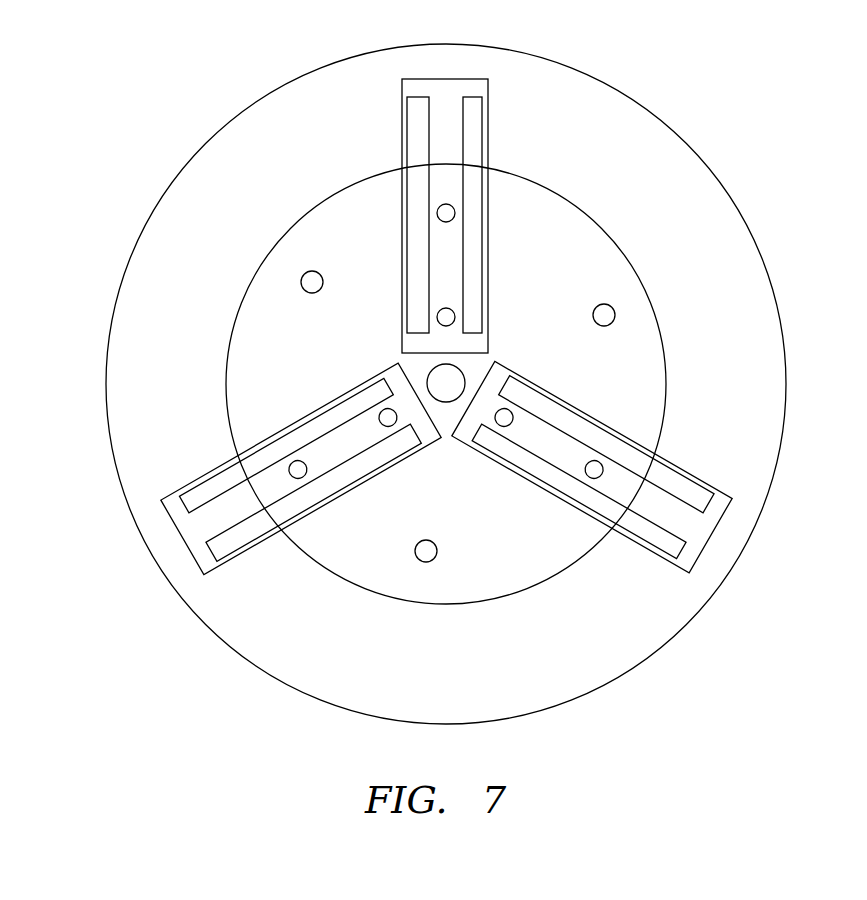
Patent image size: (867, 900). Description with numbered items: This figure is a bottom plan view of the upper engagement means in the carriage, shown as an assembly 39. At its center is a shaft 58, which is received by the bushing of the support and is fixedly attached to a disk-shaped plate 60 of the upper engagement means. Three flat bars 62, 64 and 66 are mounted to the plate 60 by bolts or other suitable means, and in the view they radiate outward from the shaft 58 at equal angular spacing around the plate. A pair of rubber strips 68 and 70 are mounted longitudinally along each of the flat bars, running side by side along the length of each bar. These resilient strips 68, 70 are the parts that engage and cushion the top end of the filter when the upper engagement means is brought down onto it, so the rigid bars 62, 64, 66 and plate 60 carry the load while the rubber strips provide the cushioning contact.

The chuck assembly 39 is at (175, 118).
The shaft 58 is at (462, 380).
The disk-shaped plate 60 is at (635, 98).
The flat bar 62 is at (402, 125).
The flat bar 64 is at (317, 407).
The flat bar 66 is at (567, 503).
The rubber strip 68 is at (413, 150).
The rubber strip 70 is at (470, 148).